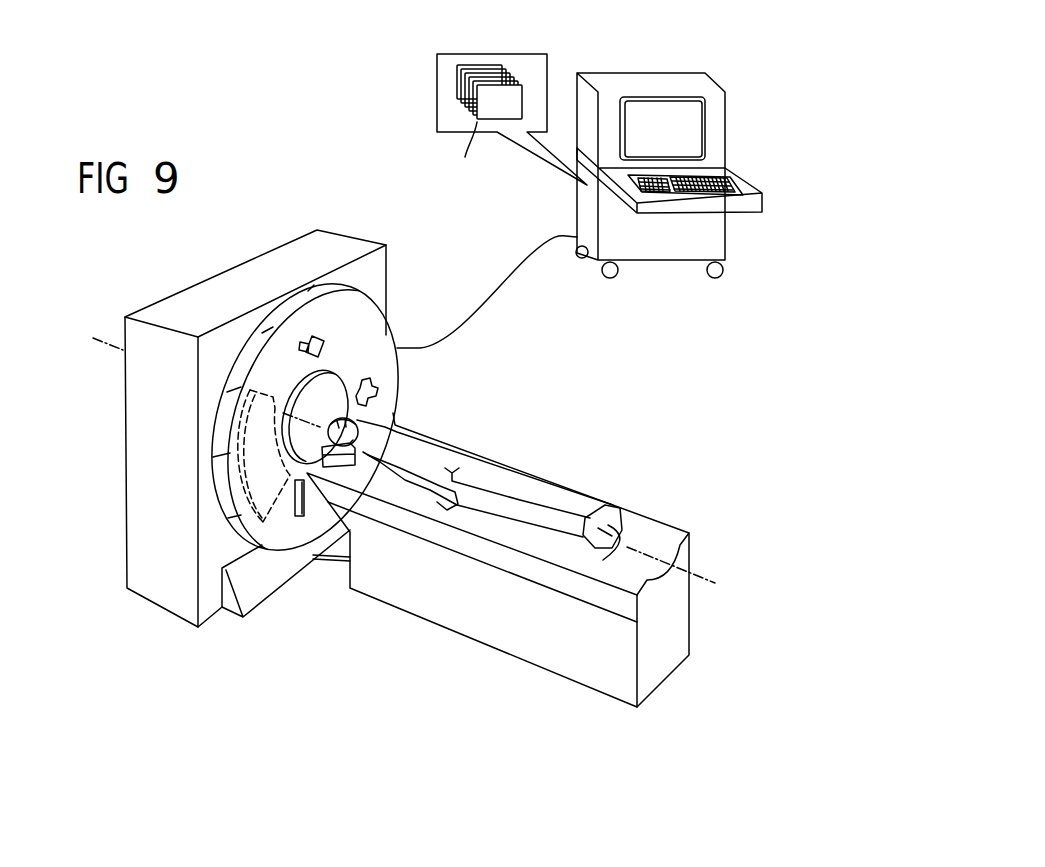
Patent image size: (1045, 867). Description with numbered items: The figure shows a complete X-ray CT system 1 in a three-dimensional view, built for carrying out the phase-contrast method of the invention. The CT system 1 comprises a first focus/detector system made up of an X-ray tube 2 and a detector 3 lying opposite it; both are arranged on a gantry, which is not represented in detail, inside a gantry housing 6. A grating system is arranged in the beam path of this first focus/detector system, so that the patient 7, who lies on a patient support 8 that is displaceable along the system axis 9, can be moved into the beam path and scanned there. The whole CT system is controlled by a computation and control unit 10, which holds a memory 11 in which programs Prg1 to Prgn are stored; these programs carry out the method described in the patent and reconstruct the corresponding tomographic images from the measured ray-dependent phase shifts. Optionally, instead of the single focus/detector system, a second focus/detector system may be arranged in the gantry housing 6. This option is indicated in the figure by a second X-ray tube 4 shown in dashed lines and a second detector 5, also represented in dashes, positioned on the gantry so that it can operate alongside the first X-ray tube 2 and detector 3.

The CT system 1 is at (183, 652).
The X-ray tube 2 is at (324, 341).
The detector 3 is at (302, 517).
The X-ray tube 4 is at (380, 391).
The detector 5 is at (266, 505).
The gantry housing 6 is at (133, 543).
The patient 7 is at (427, 458).
The patient support 8 is at (530, 640).
The system axis 9 is at (700, 571).
The computation and control unit 10 is at (728, 145).
The memory 11 is at (437, 70).